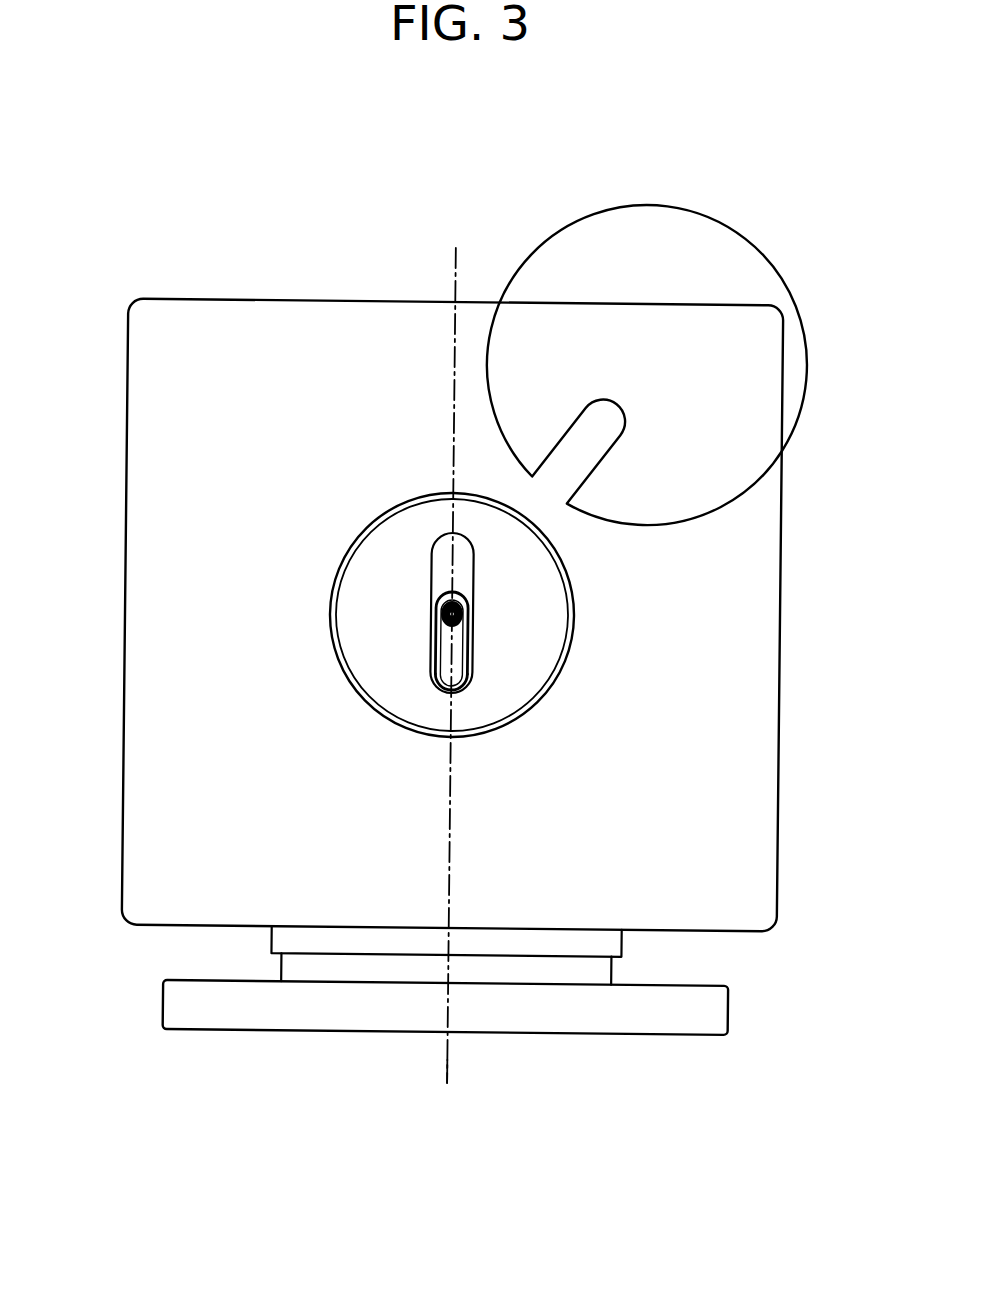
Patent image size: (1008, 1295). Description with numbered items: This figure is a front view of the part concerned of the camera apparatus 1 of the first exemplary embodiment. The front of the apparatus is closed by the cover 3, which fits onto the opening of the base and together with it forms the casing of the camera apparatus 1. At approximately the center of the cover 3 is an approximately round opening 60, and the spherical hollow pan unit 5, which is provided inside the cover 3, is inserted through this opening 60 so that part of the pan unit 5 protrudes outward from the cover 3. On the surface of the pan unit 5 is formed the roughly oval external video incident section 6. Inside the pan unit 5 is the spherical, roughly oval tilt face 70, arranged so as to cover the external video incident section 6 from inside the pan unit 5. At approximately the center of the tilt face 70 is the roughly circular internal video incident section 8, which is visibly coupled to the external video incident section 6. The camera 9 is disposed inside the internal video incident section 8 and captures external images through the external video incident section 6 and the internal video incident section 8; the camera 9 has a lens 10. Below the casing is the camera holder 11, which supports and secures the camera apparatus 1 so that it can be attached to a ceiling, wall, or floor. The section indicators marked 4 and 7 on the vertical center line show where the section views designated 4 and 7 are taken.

The camera apparatus 1 is at (667, 246).
The cover 3 is at (761, 403).
The pan unit 5 is at (532, 647).
The opening 60 is at (573, 592).
The external video incident section 6 is at (472, 587).
The internal video incident section 8 is at (462, 630).
The tilt face 70 is at (446, 690).
The lens 10 is at (440, 630).
The camera 9 is at (446, 617).
The camera holder 11 is at (702, 1004).
The section line 4 is at (452, 248).
The section line 7 is at (452, 1083).